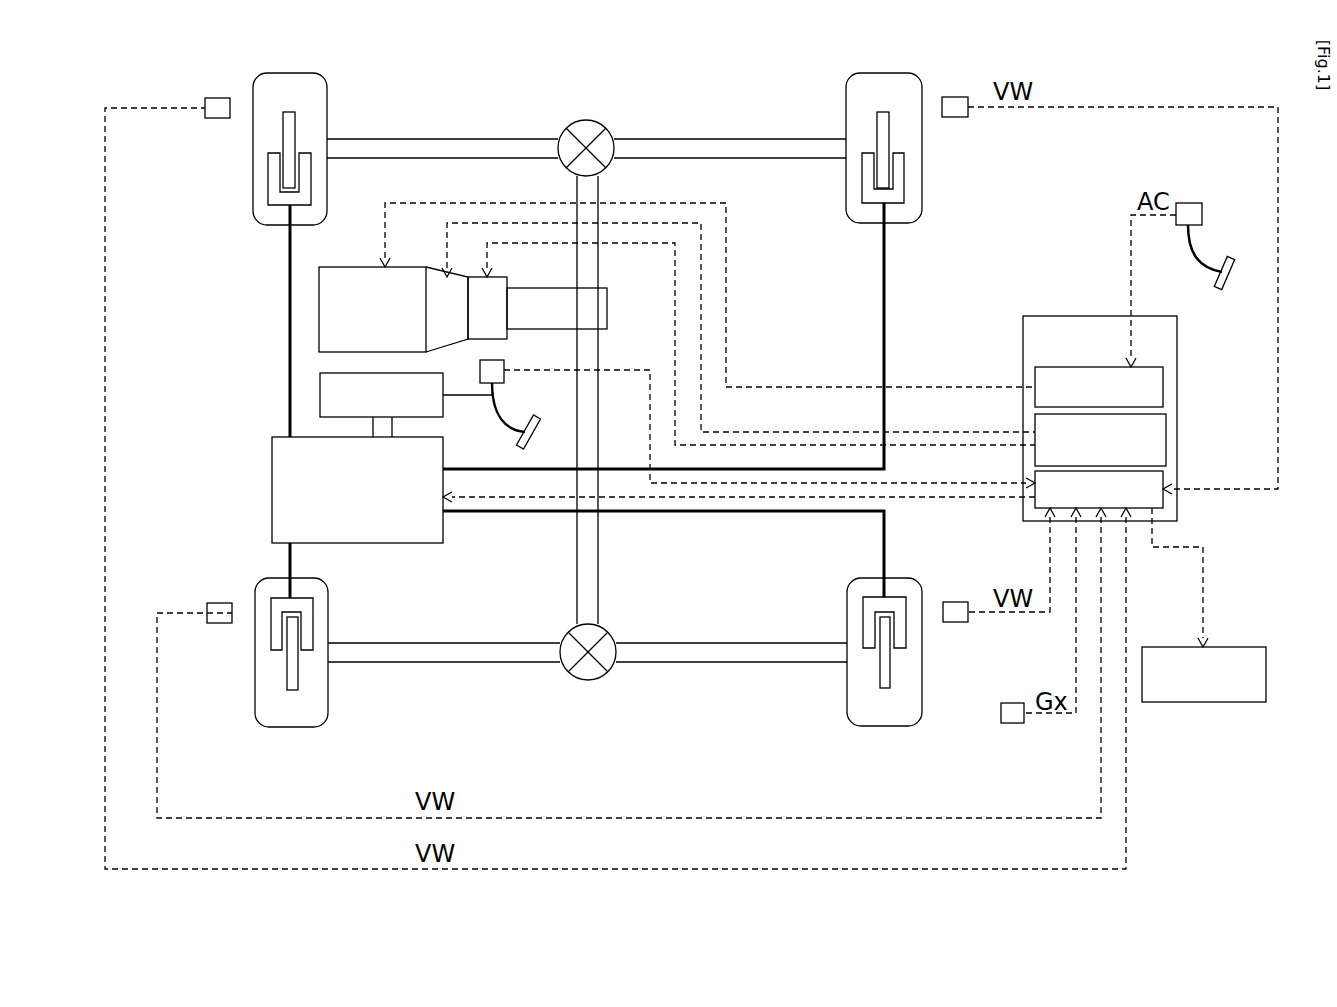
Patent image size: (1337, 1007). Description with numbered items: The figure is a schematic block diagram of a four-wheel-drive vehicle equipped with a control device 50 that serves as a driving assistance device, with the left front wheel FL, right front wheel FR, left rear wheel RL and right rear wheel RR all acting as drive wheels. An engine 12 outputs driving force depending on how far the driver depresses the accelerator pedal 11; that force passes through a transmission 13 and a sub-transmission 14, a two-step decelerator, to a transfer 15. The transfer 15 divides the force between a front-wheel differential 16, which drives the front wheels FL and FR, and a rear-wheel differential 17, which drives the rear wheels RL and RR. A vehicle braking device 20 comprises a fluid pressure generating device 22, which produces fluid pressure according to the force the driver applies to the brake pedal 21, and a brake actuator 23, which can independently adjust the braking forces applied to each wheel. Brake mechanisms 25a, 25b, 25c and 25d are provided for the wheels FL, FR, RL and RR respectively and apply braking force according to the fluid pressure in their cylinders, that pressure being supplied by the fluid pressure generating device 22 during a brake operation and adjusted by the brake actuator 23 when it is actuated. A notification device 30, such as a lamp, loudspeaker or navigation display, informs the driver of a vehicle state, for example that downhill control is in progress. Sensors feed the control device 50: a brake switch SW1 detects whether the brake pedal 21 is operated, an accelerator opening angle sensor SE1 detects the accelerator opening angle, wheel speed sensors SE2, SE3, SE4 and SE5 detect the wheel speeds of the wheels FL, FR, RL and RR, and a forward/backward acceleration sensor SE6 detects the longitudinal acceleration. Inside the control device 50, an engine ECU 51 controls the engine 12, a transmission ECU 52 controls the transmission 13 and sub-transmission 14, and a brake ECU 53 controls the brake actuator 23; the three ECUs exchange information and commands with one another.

The accelerator pedal 11 is at (1234, 265).
The engine 12 is at (319, 307).
The transmission 13 is at (447, 309).
The sub-transmission 14 is at (487, 308).
The transfer 15 is at (557, 308).
The front-wheel differential 16 is at (572, 124).
The rear-wheel differential 17 is at (600, 680).
The vehicle braking device 20 is at (391, 463).
The brake pedal 21 is at (538, 420).
The fluid pressure generating device 22 is at (320, 395).
The brake actuator 23 is at (423, 543).
The brake mechanism 25a is at (261, 213).
The brake mechanism 25b is at (913, 212).
The brake mechanism 25c is at (324, 622).
The brake mechanism 25d is at (863, 587).
The notification device 30 is at (1223, 702).
The control device 50 is at (1126, 398).
The engine ECU 51 is at (1163, 387).
The transmission ECU 52 is at (1166, 440).
The brake ECU 53 is at (1163, 505).
The accelerator opening angle sensor SE1 is at (1188, 203).
The wheel speed sensor SE2 is at (217, 118).
The wheel speed sensor SE3 is at (955, 117).
The wheel speed sensor SE4 is at (219, 623).
The wheel speed sensor SE5 is at (955, 622).
The forward/backward acceleration sensor SE6 is at (1012, 723).
The brake switch SW1 is at (504, 362).
The left front wheel FL is at (286, 152).
The right front wheel FR is at (885, 152).
The left rear wheel RL is at (327, 682).
The right rear wheel RR is at (873, 661).